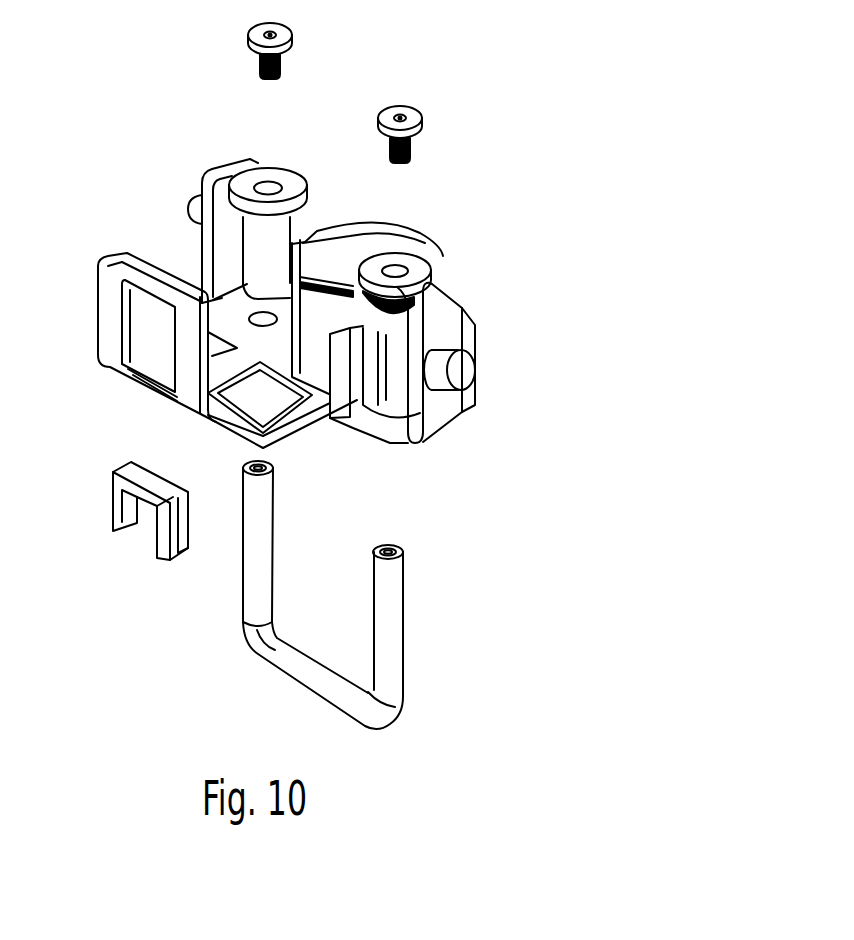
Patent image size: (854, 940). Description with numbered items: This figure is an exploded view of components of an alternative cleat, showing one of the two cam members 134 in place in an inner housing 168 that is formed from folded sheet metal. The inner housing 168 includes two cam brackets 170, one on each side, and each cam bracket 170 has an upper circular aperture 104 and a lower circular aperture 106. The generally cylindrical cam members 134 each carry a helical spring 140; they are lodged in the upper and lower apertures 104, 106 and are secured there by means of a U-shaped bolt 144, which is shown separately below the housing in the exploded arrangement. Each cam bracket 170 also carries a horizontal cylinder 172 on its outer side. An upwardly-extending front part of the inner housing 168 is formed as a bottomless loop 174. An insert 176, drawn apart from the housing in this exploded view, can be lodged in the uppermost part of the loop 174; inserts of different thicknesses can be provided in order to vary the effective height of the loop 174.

The upper circular aperture 104 is at (268, 184).
The lower circular aperture 106 is at (264, 312).
The cam member 134 is at (396, 394).
The helical spring 140 is at (398, 290).
The U-shaped bolt 144 is at (398, 637).
The inner housing 168 is at (145, 226).
The cam bracket 170 is at (226, 167).
The horizontal cylinder 172 is at (190, 200).
The bottomless loop 174 is at (105, 302).
The insert 176 is at (110, 504).